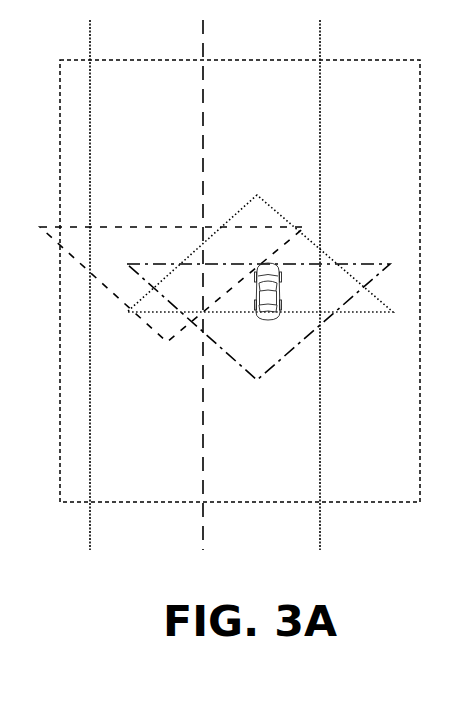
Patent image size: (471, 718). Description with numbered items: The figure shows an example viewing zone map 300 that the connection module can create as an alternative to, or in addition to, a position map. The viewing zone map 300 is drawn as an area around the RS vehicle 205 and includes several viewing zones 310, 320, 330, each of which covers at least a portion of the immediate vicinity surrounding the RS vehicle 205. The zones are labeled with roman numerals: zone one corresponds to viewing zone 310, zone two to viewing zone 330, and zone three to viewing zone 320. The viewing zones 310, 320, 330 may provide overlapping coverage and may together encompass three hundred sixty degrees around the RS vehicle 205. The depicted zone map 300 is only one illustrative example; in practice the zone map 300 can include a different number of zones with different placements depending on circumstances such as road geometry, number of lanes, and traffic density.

The viewing zone map 300 is at (356, 60).
The RS vehicle 205 is at (280, 292).
The viewing zone (zone I) 310 is at (293, 348).
The viewing zone (zone III) 320 is at (275, 212).
The viewing zone (zone II) 330 is at (155, 226).